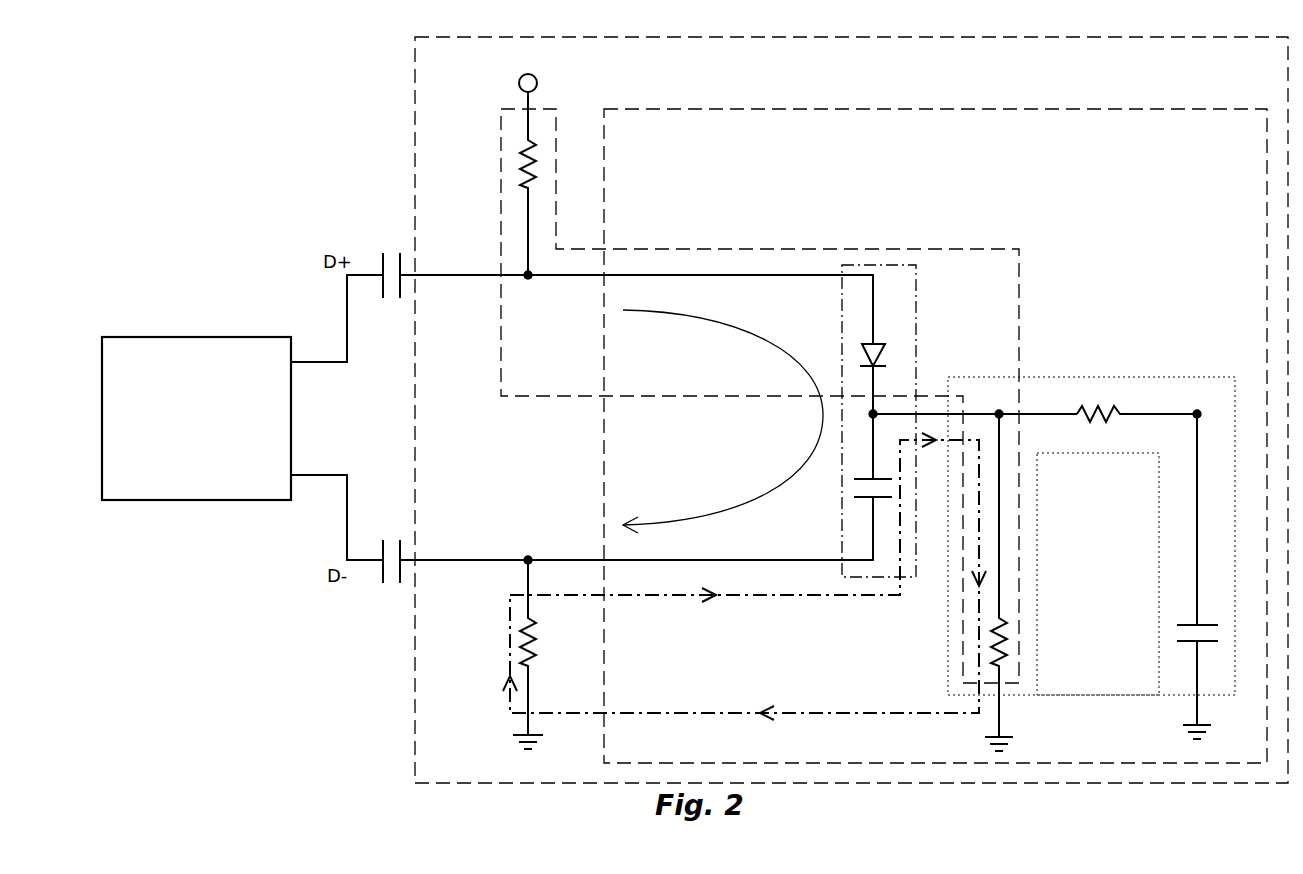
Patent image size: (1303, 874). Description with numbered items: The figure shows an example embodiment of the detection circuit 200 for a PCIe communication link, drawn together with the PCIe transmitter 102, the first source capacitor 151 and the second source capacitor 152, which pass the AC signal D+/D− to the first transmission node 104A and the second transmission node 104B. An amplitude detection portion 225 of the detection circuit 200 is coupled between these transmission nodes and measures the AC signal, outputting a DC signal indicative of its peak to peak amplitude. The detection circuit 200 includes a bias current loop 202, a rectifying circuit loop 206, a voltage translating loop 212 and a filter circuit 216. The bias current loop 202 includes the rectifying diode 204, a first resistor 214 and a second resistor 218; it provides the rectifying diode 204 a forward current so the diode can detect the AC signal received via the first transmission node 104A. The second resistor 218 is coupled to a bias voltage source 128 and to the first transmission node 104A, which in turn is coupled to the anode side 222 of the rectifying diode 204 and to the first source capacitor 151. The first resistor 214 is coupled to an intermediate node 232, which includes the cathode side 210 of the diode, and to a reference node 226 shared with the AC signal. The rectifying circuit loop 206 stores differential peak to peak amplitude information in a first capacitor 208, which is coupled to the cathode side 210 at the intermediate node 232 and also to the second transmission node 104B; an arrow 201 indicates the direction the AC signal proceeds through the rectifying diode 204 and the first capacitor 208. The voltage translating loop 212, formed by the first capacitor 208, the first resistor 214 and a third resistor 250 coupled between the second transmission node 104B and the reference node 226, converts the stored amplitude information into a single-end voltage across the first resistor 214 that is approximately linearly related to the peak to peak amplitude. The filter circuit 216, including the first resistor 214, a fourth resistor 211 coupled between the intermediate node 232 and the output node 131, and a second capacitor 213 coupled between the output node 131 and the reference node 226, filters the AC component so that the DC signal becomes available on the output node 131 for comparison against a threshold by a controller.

The detection circuit 200 is at (1272, 61).
The amplitude detection portion 225 is at (646, 135).
The bias current loop 202 is at (501, 133).
The PCIe transmitter 102 is at (182, 435).
The first source capacitor 151 is at (383, 263).
The second source capacitor 152 is at (383, 577).
The first transmission node 104A is at (480, 273).
The second transmission node 104B is at (490, 565).
The bias voltage source 128 is at (519, 83).
The second resistor 218 is at (520, 177).
The rectifying circuit loop 206 is at (916, 290).
The anode side 222 is at (885, 346).
The rectifying diode 204 is at (885, 357).
The cathode side 210 is at (887, 367).
The intermediate node 232 is at (926, 414).
The first capacitor 208 is at (855, 490).
The arrow 201 is at (623, 525).
The voltage translating loop 212 is at (705, 713).
The third resistor 250 is at (522, 643).
The reference node 226 is at (515, 738).
The fourth resistor 211 is at (1080, 407).
The first resistor 214 is at (1005, 660).
The output node 131 is at (1197, 525).
The filter circuit 216 is at (1159, 568).
The second capacitor 213 is at (1177, 633).